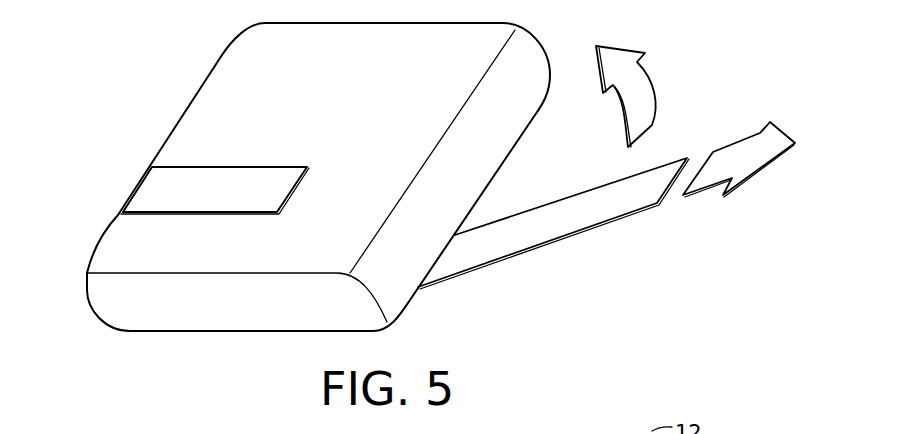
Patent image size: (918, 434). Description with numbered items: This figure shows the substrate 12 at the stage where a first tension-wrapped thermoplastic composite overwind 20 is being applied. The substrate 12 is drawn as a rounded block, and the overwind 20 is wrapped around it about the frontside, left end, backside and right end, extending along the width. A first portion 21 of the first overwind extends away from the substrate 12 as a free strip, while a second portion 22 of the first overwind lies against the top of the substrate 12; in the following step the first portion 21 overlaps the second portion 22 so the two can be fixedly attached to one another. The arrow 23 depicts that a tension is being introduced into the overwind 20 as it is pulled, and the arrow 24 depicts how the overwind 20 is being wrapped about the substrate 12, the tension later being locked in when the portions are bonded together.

The housing body 12 is at (245, 63).
The first tension-wrapped thermoplastic composite overwind 20 is at (173, 198).
The first portion of the first overwind 21 is at (632, 192).
The second portion of the first overwind 22 is at (243, 183).
The arrow depicting tension 23 is at (772, 140).
The arrow depicting wrapping 24 is at (637, 98).